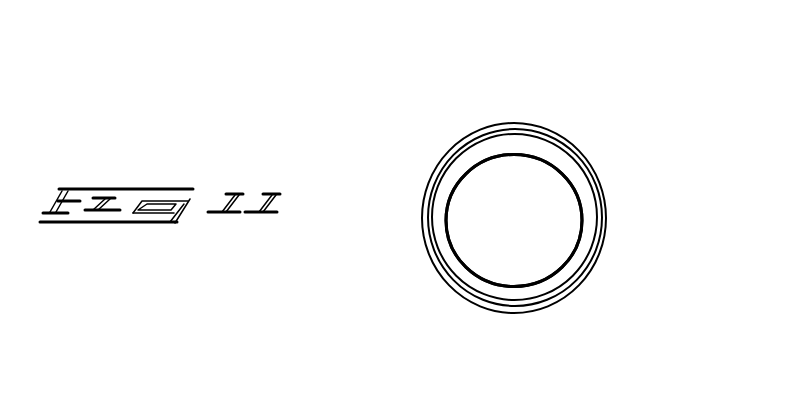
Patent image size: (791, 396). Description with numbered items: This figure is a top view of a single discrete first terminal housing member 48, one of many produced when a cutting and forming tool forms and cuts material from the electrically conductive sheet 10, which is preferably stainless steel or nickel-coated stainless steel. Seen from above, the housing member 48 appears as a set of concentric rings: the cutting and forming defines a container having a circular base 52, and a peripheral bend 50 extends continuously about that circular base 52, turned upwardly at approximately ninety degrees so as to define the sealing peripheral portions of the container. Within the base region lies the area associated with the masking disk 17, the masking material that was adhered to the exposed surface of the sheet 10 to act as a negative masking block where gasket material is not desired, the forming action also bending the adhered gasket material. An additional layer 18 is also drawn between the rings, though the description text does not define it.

The electrically conductive sheet 10 is at (585, 190).
The masking disk 17 is at (514, 163).
The outer layer 18 is at (606, 232).
The terminal housing member 48 is at (392, 164).
The peripheral bend 50 is at (572, 134).
The circular base 52 is at (562, 236).